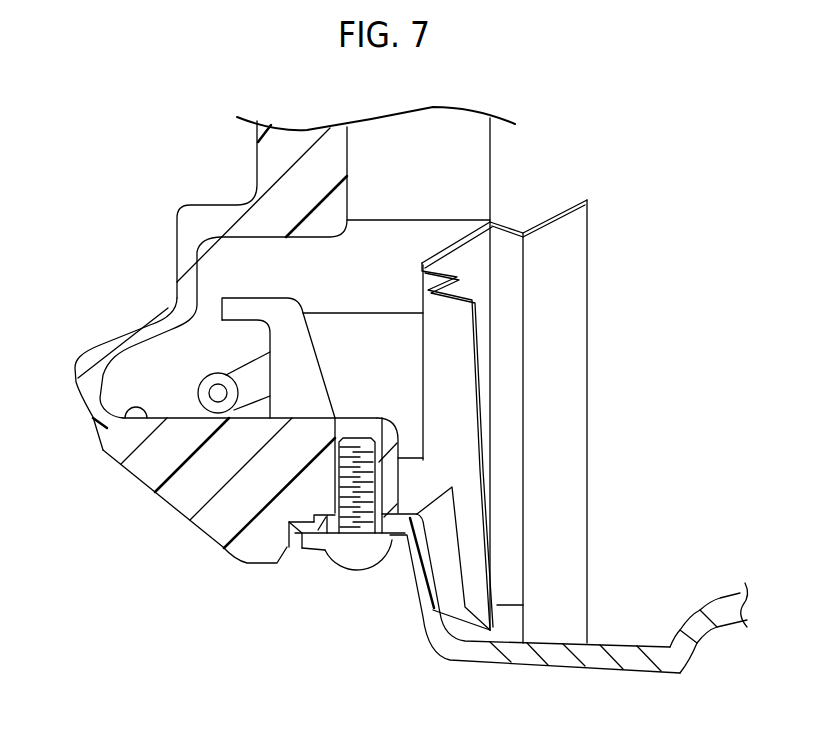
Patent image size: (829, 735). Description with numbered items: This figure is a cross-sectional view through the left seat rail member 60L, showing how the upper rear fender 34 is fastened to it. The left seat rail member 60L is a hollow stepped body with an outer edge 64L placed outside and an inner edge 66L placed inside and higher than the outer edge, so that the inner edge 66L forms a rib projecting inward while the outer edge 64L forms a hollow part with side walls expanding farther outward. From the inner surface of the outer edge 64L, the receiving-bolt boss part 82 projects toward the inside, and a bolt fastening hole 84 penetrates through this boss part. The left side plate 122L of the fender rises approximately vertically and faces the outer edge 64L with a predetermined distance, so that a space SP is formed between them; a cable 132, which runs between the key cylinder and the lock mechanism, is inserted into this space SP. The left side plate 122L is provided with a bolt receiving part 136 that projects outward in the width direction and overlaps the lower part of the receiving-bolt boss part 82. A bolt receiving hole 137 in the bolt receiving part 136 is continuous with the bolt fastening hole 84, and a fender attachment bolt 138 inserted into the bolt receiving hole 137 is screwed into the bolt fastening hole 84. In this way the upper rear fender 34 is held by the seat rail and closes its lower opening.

The left seat rail member 60L is at (265, 571).
The outer edge 64L is at (140, 327).
The inner edge 66L is at (215, 203).
The receiving-bolt boss part 82 is at (190, 500).
The bolt fastening hole 84 is at (338, 428).
The left side plate 122L is at (570, 252).
The cable 132 is at (220, 380).
The bolt receiving part 136 is at (403, 595).
The bolt receiving hole 137 is at (370, 523).
The fender attachment bolt 138 is at (362, 445).
The upper rear fender 34 is at (709, 604).
The space SP is at (120, 421).